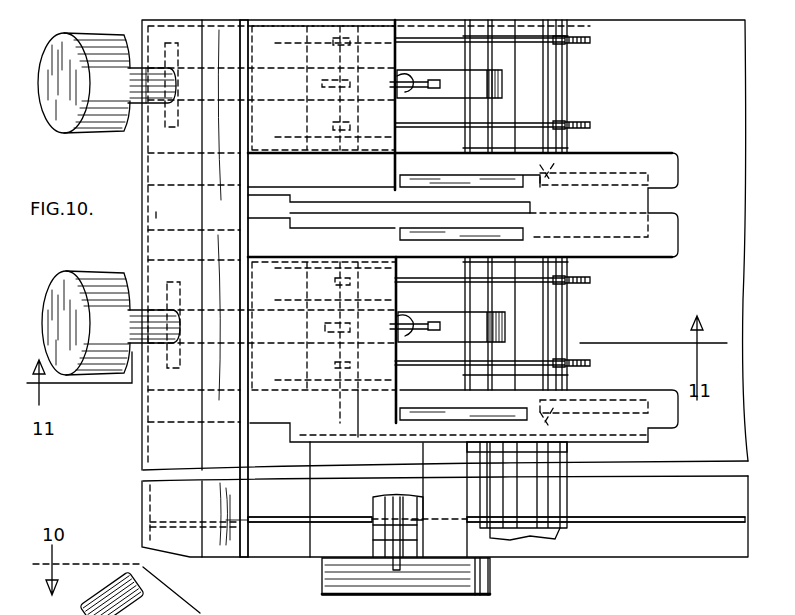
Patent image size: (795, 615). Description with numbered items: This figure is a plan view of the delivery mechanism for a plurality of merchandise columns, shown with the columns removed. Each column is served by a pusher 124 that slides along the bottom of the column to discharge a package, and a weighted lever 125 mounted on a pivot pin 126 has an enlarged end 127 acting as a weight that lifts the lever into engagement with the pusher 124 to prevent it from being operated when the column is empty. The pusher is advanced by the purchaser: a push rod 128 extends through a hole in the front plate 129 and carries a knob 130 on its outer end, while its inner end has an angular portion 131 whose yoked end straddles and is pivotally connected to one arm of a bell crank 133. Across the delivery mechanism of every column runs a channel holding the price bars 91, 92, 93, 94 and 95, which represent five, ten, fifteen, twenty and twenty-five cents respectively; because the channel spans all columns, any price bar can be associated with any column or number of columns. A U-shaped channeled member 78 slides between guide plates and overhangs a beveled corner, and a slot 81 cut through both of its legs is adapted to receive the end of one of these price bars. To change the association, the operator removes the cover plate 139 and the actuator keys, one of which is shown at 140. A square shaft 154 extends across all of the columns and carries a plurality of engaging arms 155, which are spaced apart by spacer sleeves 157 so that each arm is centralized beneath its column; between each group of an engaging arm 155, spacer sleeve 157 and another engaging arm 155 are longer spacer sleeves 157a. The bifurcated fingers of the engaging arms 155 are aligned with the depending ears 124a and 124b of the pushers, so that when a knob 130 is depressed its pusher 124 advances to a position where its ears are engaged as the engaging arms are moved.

The channeled member 78 is at (492, 590).
The slot 81 is at (403, 570).
The price bar 91 is at (410, 503).
The price bar 92 is at (412, 537).
The price bar 93 is at (395, 578).
The price bar 94 is at (390, 542).
The price bar 95 is at (373, 510).
The pusher 124 is at (394, 141).
The depending ear 124a is at (395, 380).
The depending ear 124b is at (396, 46).
The lever 125 is at (466, 180).
The pivot pin 126 is at (548, 180).
The enlarged end 127 is at (600, 167).
The push rod 128 is at (140, 104).
The front plate 129 is at (152, 218).
The knob 130 is at (58, 48).
The angular portion 131 is at (408, 92).
The bell crank 133 is at (451, 206).
The cover plate 139 is at (342, 490).
The actuator key 140 is at (477, 93).
The square shaft 154 is at (562, 538).
The engaging arm 155 is at (590, 40).
The spacer sleeve 157 is at (548, 85).
The spacer sleeve 157a is at (553, 28).